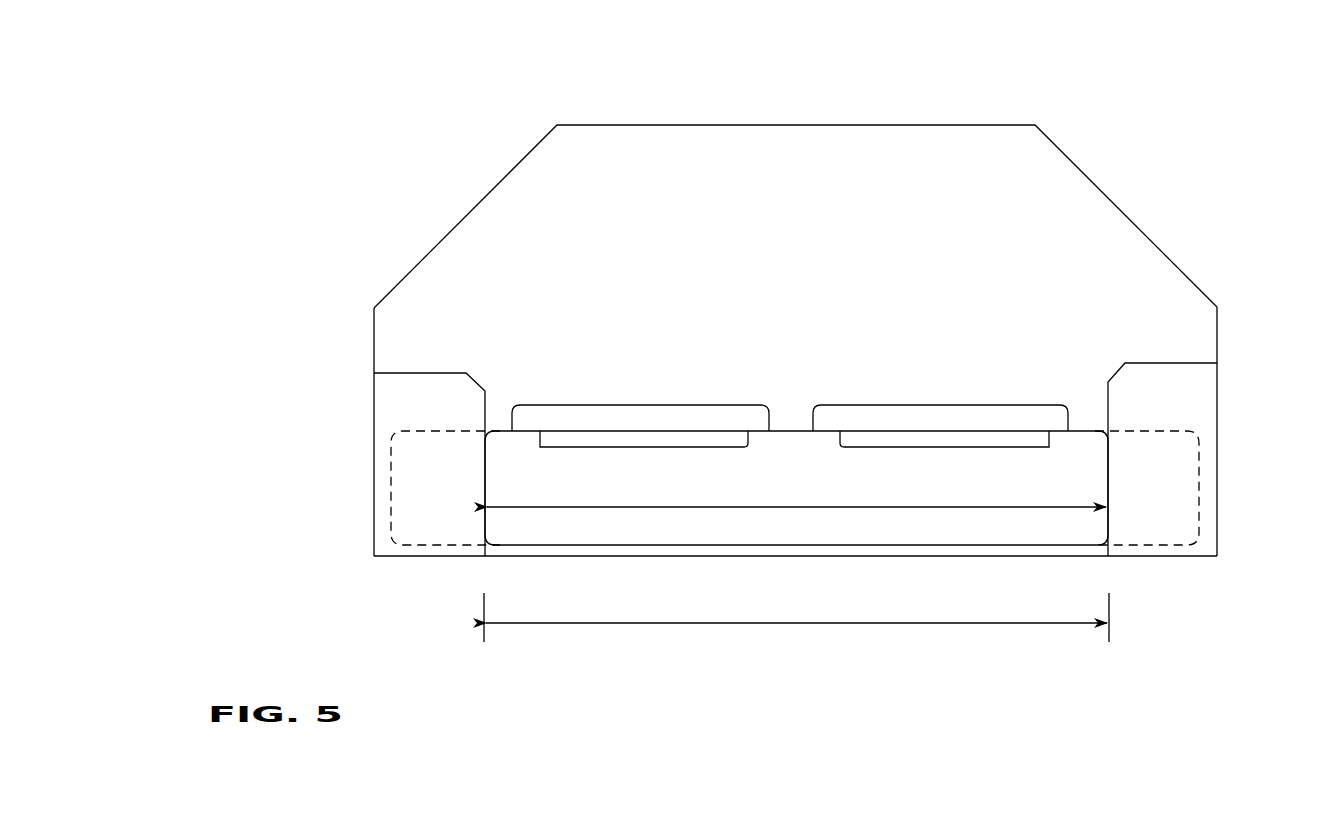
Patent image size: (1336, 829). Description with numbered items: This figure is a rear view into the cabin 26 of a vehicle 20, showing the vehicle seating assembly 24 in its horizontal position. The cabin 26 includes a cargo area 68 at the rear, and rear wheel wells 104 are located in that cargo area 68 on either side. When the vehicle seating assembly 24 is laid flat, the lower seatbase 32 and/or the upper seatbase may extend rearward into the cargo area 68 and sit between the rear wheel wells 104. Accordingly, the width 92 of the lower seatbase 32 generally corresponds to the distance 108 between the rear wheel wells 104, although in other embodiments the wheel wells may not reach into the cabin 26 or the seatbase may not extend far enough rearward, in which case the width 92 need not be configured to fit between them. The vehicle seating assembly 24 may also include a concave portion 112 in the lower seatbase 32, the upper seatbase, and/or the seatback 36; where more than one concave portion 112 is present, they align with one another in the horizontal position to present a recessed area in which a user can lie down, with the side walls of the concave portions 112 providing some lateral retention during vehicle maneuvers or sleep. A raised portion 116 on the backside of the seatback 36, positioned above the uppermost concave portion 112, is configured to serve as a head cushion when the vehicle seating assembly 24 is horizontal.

The vehicle 20 is at (380, 163).
The cabin 26 is at (530, 185).
The vehicle seating assembly 24 is at (1082, 430).
The lower seatbase 32 is at (908, 528).
The seatback 36 is at (432, 510).
The cargo area 68 is at (1080, 552).
The width 92 is at (758, 623).
The rear wheel wells 104 is at (393, 396).
The distance 108 is at (735, 508).
The concave portion 112 is at (540, 447).
The raised portion 116 is at (863, 410).